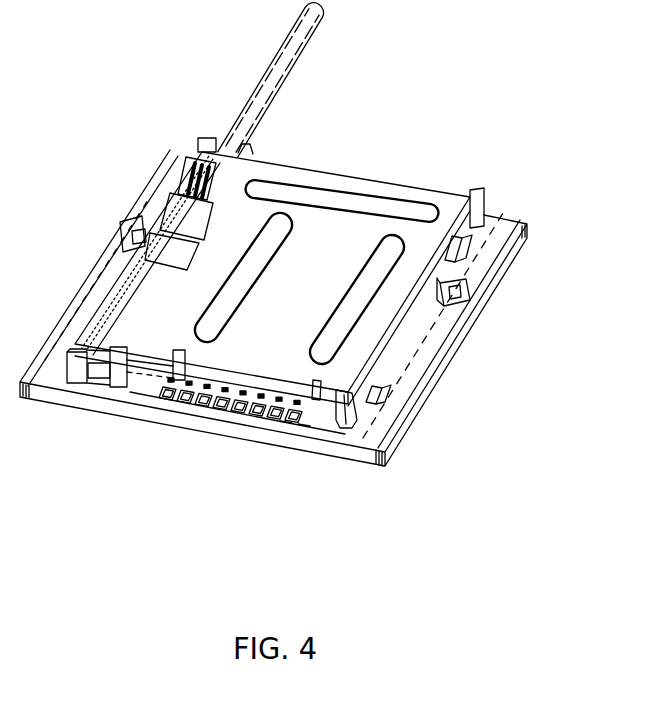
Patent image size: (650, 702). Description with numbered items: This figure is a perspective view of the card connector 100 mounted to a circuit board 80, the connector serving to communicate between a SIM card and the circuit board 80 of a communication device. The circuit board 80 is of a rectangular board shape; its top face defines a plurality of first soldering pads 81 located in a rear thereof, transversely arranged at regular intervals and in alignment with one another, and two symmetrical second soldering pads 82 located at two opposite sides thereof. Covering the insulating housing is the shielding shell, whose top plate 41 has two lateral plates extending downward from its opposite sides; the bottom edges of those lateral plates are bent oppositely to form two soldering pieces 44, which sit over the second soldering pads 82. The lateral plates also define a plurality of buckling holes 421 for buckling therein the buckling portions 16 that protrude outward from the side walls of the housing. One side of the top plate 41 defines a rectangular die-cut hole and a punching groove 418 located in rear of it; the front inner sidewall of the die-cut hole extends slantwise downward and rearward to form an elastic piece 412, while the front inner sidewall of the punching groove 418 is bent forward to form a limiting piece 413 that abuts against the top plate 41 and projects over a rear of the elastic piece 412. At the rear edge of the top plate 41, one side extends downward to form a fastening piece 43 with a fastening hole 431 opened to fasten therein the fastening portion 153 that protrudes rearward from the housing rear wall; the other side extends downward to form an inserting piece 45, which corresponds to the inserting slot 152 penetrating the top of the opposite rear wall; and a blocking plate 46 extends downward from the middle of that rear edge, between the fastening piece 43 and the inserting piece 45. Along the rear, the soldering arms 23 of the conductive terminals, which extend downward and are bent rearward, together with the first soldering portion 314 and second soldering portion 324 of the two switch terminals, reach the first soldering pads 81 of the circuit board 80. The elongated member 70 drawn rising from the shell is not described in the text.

The card connector 100 is at (285, 247).
The ejector rod 70 is at (297, 50).
The top plate 41 is at (127, 285).
The elastic piece 412 is at (222, 196).
The limiting piece 413 is at (190, 213).
The punching groove 418 is at (160, 255).
The second soldering pads 82 is at (143, 220).
The soldering pieces 44 is at (133, 236).
The buckling holes 421 is at (463, 240).
The buckling portions 16 is at (467, 244).
The circuit board 80 is at (452, 325).
The fastening portion 153 is at (85, 380).
The fastening hole 431 is at (107, 380).
The fastening piece 43 is at (113, 385).
The first soldering pads 81 is at (163, 397).
The blocking plate 46 is at (182, 400).
The soldering arm 23 is at (200, 405).
The first soldering portion 314 is at (280, 420).
The second soldering portion 324 is at (300, 425).
The inserting slot 152 is at (317, 392).
The inserting piece 45 is at (343, 397).